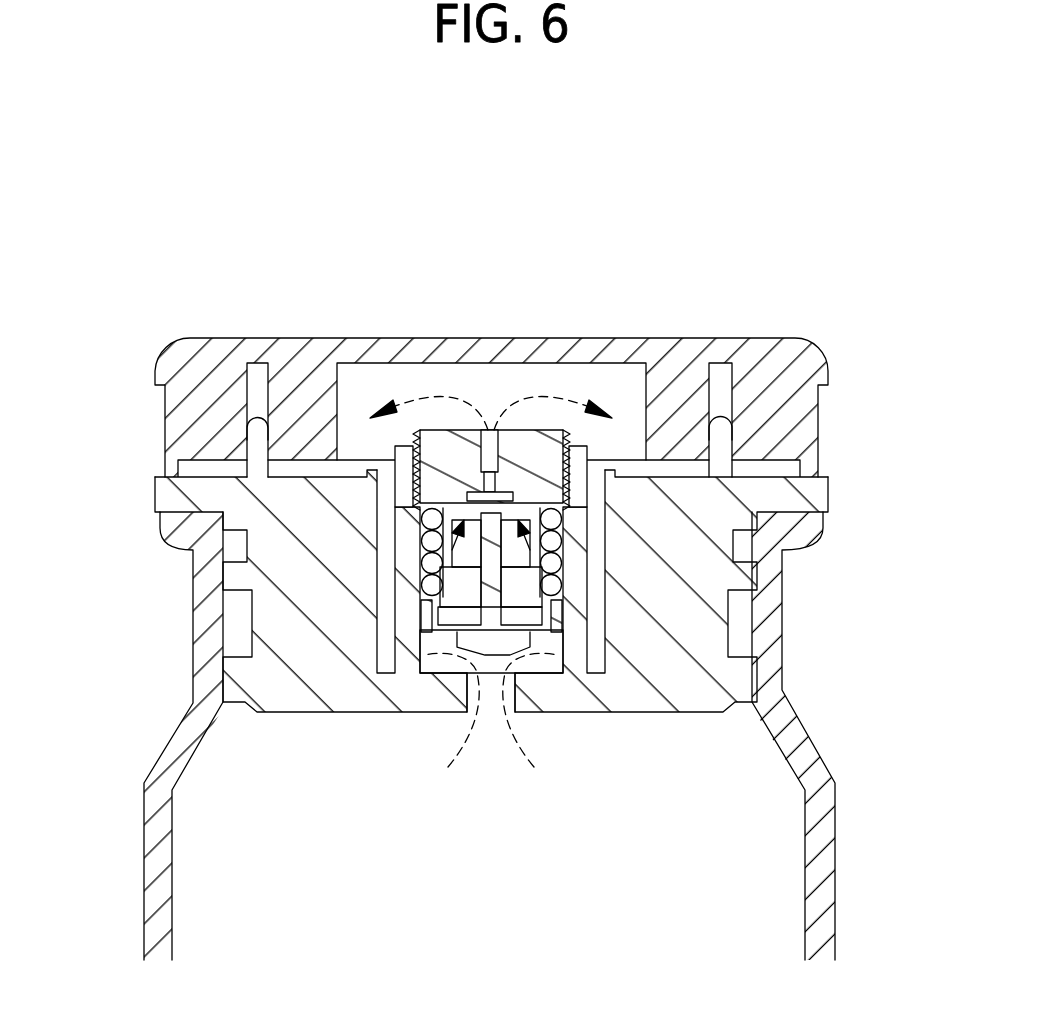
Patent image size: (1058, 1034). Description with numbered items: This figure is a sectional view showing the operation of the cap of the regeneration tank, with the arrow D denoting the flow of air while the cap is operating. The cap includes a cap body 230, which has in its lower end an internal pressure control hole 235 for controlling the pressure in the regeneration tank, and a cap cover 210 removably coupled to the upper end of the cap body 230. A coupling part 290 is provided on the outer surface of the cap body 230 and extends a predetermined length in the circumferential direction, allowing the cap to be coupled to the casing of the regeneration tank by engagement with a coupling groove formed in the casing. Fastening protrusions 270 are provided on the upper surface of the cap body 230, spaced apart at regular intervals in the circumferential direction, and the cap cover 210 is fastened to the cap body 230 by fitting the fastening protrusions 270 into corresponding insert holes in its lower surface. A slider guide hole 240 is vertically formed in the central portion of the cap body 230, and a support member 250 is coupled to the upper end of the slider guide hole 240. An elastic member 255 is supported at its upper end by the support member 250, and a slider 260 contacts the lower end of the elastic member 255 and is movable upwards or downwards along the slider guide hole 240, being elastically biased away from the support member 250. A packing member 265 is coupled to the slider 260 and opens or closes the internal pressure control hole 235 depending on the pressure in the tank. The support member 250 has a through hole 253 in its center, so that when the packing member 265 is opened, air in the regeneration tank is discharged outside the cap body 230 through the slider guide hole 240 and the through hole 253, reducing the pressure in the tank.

The cap cover 210 is at (762, 357).
The cap body 230 is at (720, 628).
The internal pressure control hole 235 is at (490, 687).
The slider guide hole 240 is at (556, 506).
The support member 250 is at (523, 445).
The through hole 253 is at (494, 462).
The elastic member 255 is at (457, 457).
The slider 260 is at (530, 642).
The packing member 265 is at (478, 648).
The fastening protrusions 270 is at (250, 437).
The coupling part 290 is at (742, 684).